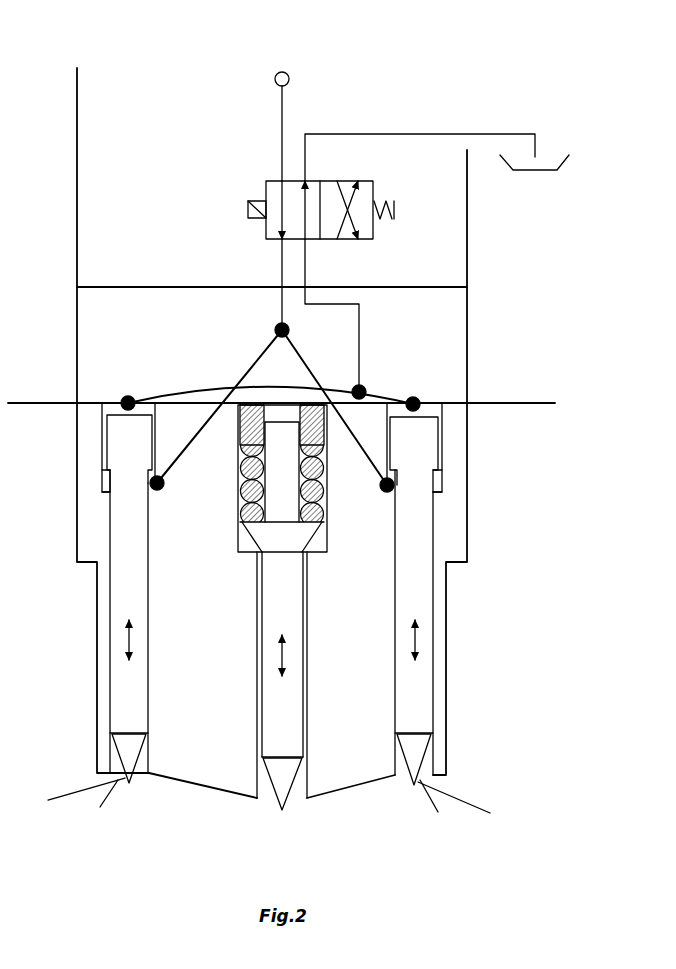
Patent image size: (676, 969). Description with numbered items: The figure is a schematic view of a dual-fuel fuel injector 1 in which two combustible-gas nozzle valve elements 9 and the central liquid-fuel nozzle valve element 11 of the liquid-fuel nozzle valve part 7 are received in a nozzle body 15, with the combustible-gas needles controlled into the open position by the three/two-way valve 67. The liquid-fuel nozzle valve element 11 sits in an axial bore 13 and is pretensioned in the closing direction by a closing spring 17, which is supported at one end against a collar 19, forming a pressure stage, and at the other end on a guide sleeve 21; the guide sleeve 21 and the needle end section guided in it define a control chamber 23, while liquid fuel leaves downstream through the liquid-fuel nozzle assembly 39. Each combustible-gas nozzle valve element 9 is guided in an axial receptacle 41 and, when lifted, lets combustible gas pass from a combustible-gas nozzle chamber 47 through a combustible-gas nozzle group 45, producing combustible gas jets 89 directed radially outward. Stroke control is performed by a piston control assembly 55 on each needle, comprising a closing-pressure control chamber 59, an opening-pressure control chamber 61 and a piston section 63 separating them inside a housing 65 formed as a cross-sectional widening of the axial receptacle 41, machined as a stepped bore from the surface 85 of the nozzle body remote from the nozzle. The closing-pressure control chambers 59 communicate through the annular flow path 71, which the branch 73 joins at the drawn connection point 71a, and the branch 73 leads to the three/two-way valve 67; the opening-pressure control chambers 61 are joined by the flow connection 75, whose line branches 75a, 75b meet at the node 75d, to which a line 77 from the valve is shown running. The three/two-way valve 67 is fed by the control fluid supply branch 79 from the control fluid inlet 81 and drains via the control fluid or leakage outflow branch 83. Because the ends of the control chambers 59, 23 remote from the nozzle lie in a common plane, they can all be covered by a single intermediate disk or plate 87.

The fuel injector 1 is at (203, 190).
The liquid-fuel nozzle valve part 7 is at (316, 612).
The combustible-gas nozzle valve element 9 is at (142, 705).
The liquid-fuel nozzle valve element 11 is at (260, 600).
The axial bore 13 is at (258, 655).
The nozzle body 15 is at (213, 726).
The closing spring 17 is at (318, 492).
The collar 19 is at (285, 538).
The guide sleeve 21 is at (238, 430).
The control chamber 23 is at (289, 422).
The liquid-fuel nozzle assembly 39 is at (288, 816).
The axial receptacle 41 is at (151, 600).
The combustible-gas nozzle group 45 is at (131, 796).
The combustible-gas nozzle chamber 47 is at (147, 765).
The piston control assembly 55 is at (125, 458).
The closing-pressure control chamber 59 is at (115, 412).
The opening-pressure control chamber 61 is at (103, 489).
The piston section 63 is at (272, 447).
The housing 65 is at (100, 473).
The 3/2-way valve 67 is at (268, 178).
The flow path 71 is at (175, 393).
The rod joint 71a is at (338, 390).
The branch 73 is at (362, 340).
The flow connection 75 is at (306, 368).
The line branch 75a is at (170, 468).
The line branch 75b is at (353, 440).
The node 75d is at (275, 325).
The pressure line 77 is at (282, 270).
The control fluid supply branch 79 is at (282, 110).
The control fluid inlet 81 is at (282, 72).
The control fluid or leakage outflow branch 83 is at (396, 133).
The surface of the nozzle body remote from the nozzle 85 is at (88, 400).
The intermediate disk or plate 87 is at (142, 324).
The combustible gas jets 89 is at (80, 790).